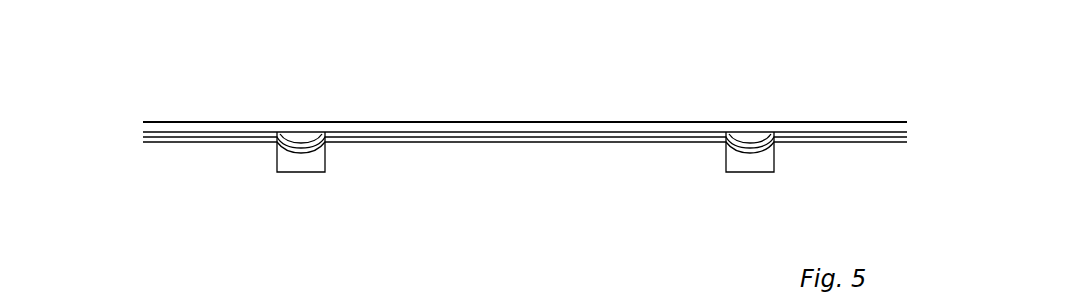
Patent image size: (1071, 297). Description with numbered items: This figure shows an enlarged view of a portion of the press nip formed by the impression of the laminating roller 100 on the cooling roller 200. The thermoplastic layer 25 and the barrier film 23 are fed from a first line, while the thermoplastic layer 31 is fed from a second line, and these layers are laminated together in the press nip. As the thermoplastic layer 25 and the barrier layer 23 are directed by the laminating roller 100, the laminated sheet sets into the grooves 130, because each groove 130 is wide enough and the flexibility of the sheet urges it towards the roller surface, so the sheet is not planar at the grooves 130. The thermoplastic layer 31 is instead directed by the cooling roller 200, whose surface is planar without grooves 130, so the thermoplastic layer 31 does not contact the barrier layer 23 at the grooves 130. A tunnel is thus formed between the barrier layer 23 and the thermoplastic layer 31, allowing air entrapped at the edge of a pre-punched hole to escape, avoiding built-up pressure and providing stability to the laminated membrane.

The thermoplastic layer 31 is at (175, 122).
The barrier film 23 is at (398, 134).
The thermoplastic layer 25 is at (527, 143).
The cooling roller 200 is at (542, 97).
The laminating roller 100 is at (613, 172).
The grooves 130 is at (277, 172).